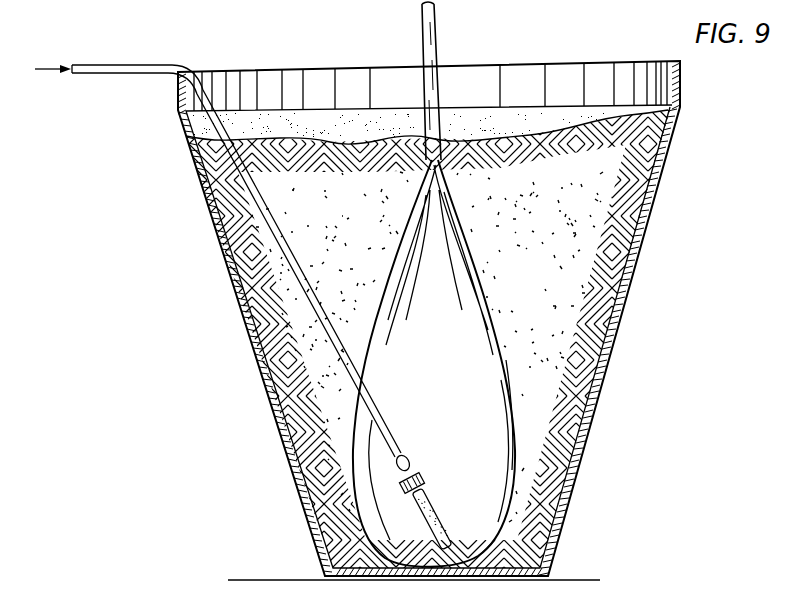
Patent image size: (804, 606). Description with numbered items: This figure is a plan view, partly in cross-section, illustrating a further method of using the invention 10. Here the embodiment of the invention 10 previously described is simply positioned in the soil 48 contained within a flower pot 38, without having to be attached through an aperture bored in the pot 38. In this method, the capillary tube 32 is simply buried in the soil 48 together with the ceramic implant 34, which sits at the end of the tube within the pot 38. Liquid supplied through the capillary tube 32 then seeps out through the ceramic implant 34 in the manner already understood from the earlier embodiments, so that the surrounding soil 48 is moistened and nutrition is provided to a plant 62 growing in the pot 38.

The invention 10 is at (444, 448).
The capillary tube 32 is at (143, 63).
The ceramic implant 34 is at (428, 502).
The flower pot 38 is at (651, 223).
The soil 48 is at (569, 358).
The plant 62 is at (438, 27).